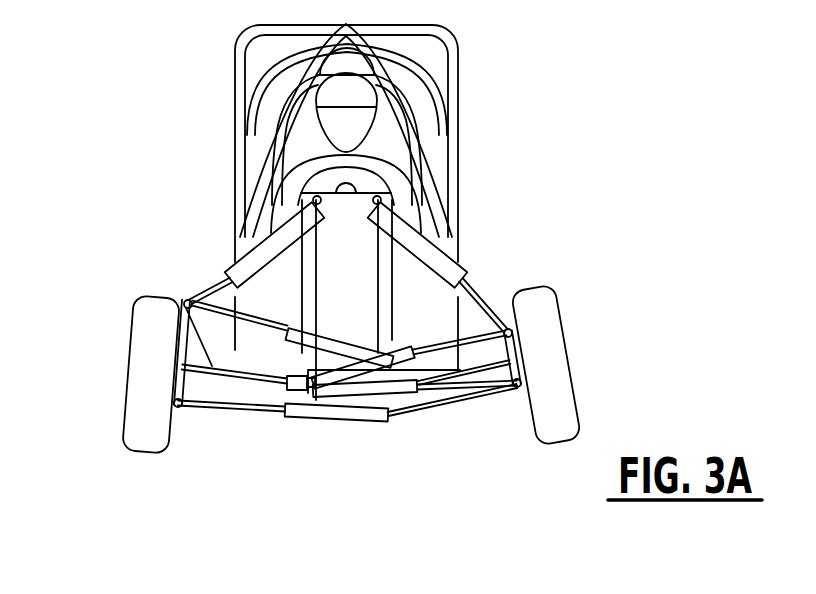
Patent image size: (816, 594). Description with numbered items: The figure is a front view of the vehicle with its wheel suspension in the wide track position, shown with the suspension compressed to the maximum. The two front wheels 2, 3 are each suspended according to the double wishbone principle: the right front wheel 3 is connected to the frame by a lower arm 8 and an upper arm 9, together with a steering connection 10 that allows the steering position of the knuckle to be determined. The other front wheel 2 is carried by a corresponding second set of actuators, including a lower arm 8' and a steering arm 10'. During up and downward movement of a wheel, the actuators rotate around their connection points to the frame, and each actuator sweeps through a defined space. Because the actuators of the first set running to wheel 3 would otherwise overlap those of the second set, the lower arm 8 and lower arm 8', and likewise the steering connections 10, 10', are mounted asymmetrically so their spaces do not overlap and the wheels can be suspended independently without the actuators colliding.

The front wheel 2 is at (543, 330).
The front wheel 3 is at (162, 311).
The lower arm 8 is at (354, 467).
The lower arm 8' is at (348, 473).
The upper arm 9 is at (379, 365).
The steering connection 10 is at (212, 457).
The steering connection 10' is at (478, 452).